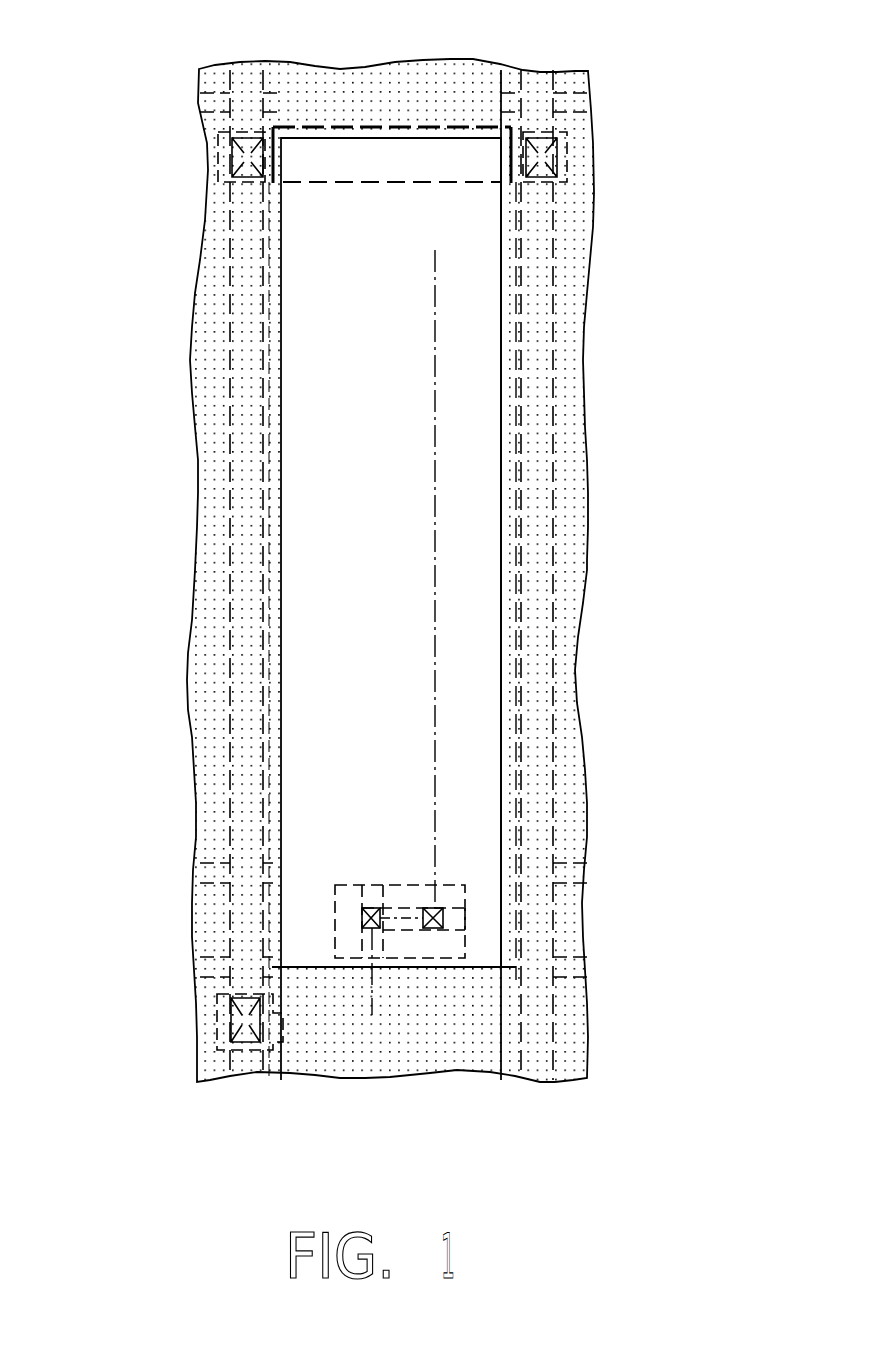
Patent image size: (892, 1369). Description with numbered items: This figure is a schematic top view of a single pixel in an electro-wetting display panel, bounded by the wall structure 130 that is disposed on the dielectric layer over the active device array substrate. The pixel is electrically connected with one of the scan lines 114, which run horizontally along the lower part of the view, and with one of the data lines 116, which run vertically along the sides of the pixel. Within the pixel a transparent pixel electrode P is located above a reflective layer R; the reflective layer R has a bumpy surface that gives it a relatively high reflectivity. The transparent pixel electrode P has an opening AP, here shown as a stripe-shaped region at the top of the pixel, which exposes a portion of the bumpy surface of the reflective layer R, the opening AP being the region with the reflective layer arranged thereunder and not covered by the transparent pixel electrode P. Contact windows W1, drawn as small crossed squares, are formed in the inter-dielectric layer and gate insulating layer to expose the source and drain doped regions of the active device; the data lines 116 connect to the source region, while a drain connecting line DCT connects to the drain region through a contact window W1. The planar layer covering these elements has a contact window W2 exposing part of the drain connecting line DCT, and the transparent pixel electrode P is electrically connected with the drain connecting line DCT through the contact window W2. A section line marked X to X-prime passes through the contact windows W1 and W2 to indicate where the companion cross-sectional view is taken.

The wall structure 130 is at (570, 350).
The data lines 116 is at (542, 443).
The transparent pixel electrode P is at (510, 543).
The reflective layer R is at (400, 148).
The opening AP is at (480, 125).
The contact windows W1 is at (237, 157).
The contact window W2 is at (443, 918).
The scan lines 114 is at (572, 972).
The drain connecting lines DCT is at (398, 925).